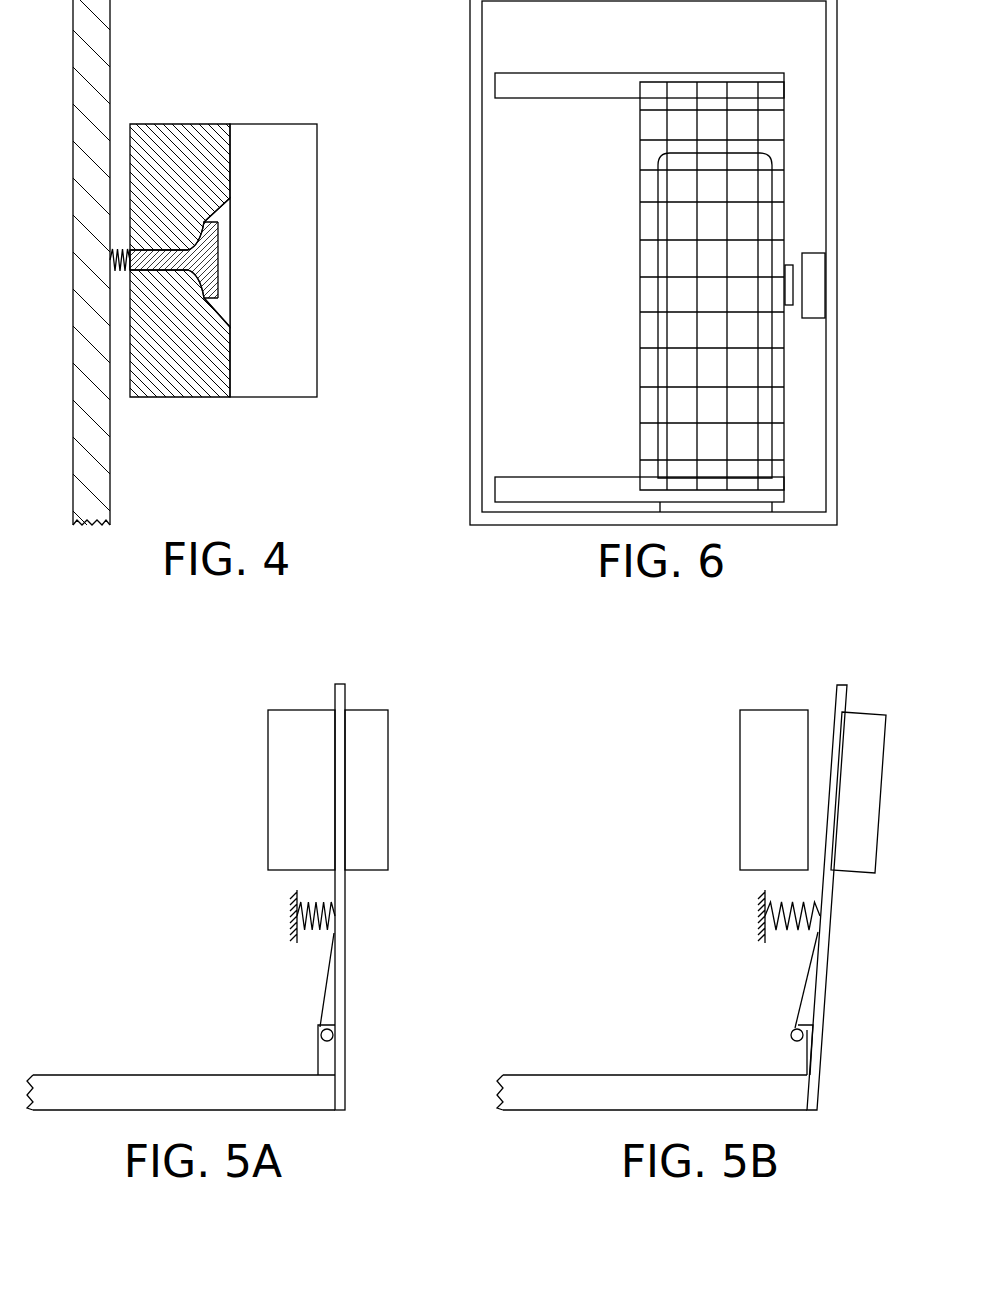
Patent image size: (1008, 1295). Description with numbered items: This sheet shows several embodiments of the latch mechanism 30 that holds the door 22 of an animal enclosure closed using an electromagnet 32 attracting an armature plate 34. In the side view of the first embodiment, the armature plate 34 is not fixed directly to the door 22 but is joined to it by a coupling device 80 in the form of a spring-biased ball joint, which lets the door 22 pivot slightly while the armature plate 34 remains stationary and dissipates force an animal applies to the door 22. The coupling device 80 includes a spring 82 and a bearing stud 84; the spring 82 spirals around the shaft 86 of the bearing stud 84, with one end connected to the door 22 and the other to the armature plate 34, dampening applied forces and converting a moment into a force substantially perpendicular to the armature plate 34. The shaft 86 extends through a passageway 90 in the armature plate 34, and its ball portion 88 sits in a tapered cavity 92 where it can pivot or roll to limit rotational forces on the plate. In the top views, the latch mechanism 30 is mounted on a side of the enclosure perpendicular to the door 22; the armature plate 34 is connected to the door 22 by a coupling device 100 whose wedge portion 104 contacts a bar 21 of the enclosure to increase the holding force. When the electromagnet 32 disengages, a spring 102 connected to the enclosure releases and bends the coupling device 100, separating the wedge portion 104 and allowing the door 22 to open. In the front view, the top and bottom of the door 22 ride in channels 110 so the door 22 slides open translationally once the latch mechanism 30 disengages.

In FIG. 5A, the bar 21 is at (320, 1037).
In FIG. 5B, the bar 21 is at (791, 1038).
In FIG. 4, the door 22 is at (78, 93).
In FIG. 6, the door 22 is at (652, 277).
In FIG. 5A, the door 22 is at (62, 1075).
In FIG. 5B, the door 22 is at (530, 1075).
In FIG. 6, the latch mechanism 30 is at (693, 262).
In FIG. 5A, the latch mechanism 30 is at (244, 889).
In FIG. 4, the electromagnet 32 is at (273, 124).
In FIG. 6, the electromagnet 32 is at (820, 253).
In FIG. 5A, the electromagnet 32 is at (283, 710).
In FIG. 5B, the electromagnet 32 is at (775, 710).
In FIG. 4, the armature plate 34 is at (173, 124).
In FIG. 6, the armature plate 34 is at (789, 303).
In FIG. 5A, the armature plate 34 is at (377, 710).
In FIG. 5B, the armature plate 34 is at (891, 735).
In FIG. 4, the coupling device 80 is at (192, 285).
In FIG. 4, the spring 82 is at (122, 272).
In FIG. 4, the bearing stud 84 is at (218, 240).
In FIG. 4, the shaft 86 is at (152, 272).
In FIG. 4, the ball portion 88 is at (218, 270).
In FIG. 4, the passageway 90 is at (152, 250).
In FIG. 4, the tapered cavity 92 is at (222, 309).
In FIG. 5A, the coupling device 100 is at (343, 1087).
In FIG. 5B, the coupling device 100 is at (816, 1085).
In FIG. 5A, the spring 102 is at (318, 930).
In FIG. 5B, the spring 102 is at (785, 932).
In FIG. 5A, the wedge portion 104 is at (333, 1005).
In FIG. 5B, the wedge portion 104 is at (805, 1002).
In FIG. 6, the channels 110 is at (525, 73).